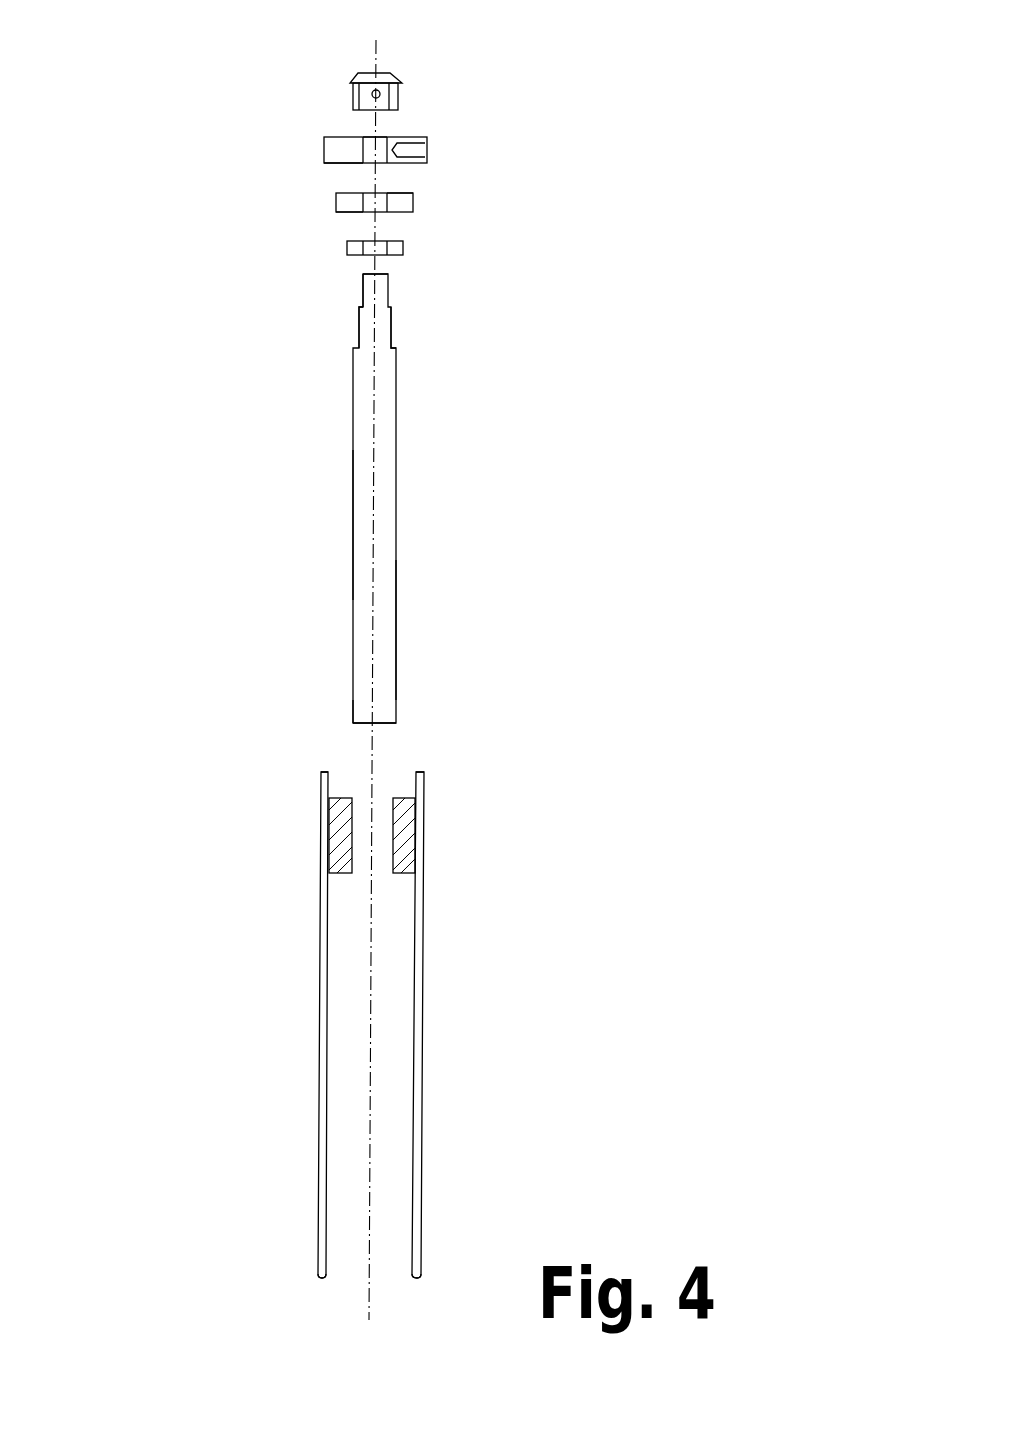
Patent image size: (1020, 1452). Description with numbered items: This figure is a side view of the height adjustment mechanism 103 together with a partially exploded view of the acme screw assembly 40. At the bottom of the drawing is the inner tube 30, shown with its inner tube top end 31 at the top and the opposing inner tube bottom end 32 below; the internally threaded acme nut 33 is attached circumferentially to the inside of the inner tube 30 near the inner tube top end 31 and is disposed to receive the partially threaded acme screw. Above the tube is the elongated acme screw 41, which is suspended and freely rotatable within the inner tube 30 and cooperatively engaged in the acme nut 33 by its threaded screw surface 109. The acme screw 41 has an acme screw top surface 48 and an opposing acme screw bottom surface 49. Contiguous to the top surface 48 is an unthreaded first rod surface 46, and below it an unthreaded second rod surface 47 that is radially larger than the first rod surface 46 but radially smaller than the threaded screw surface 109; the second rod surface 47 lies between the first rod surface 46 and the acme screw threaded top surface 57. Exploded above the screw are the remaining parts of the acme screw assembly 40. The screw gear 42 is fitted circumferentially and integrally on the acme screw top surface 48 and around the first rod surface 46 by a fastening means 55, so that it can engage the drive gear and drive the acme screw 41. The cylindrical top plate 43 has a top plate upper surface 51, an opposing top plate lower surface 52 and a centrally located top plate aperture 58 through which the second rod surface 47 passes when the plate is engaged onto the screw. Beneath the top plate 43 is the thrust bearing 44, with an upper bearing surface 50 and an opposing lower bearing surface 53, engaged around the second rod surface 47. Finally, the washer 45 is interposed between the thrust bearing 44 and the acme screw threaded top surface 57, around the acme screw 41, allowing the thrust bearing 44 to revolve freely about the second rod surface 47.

The inner tube 30 is at (423, 984).
The inner tube top end 31 is at (388, 778).
The inner tube bottom end 32 is at (352, 1295).
The acme nut 33 is at (398, 826).
The acme screw assembly 40 is at (505, 475).
The elongated acme screw 41 is at (387, 435).
The screw gear 42 is at (398, 98).
The cylindrical top plate 43 is at (418, 150).
The thrust bearing 44 is at (413, 203).
The washer 45 is at (403, 246).
The first rod surface 46 is at (362, 290).
The second rod surface 47 is at (362, 322).
The acme screw top surface 48 is at (385, 275).
The acme screw bottom surface 49 is at (362, 725).
The upper bearing surface 50 is at (412, 192).
The top plate upper surface 51 is at (347, 137).
The top plate lower surface 52 is at (333, 165).
The lower bearing surface 53 is at (347, 213).
The fastening means 55 is at (350, 94).
The acme screw threaded top surface 57 is at (392, 343).
The top plate aperture 58 is at (380, 137).
The height adjustment mechanism 103 is at (252, 695).
The threaded screw surface 109 is at (396, 635).